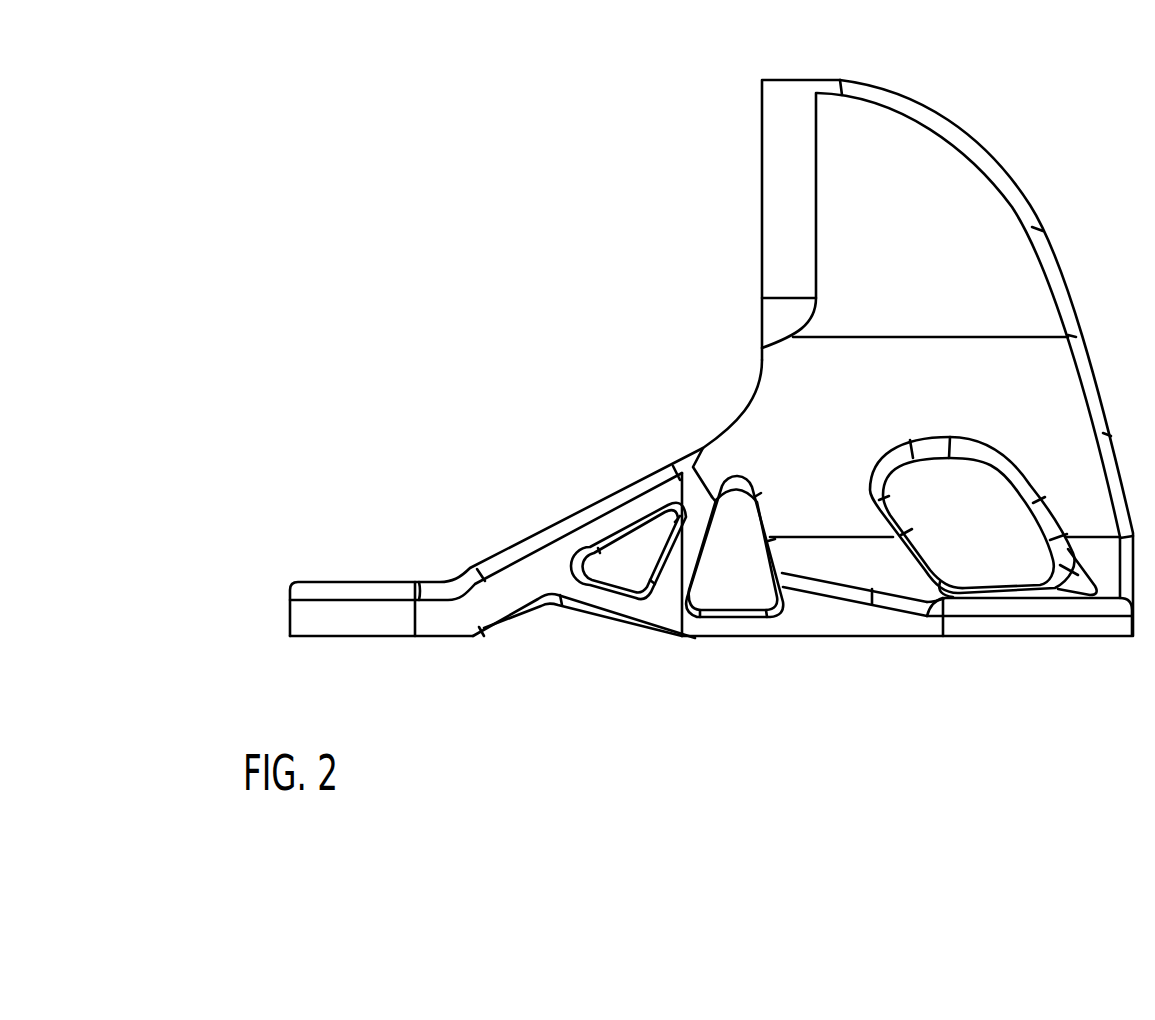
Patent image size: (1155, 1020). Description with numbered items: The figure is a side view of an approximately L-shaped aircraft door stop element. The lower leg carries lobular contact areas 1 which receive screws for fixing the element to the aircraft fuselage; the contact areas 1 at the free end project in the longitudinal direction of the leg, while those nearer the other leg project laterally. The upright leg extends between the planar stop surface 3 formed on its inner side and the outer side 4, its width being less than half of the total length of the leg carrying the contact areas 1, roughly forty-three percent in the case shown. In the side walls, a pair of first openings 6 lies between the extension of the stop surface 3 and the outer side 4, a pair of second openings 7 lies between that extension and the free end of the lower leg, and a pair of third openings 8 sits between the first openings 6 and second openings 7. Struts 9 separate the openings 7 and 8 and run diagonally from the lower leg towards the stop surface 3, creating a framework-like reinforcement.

The contact area 1 is at (350, 620).
The stop surface 3 is at (762, 215).
The outer side 4 is at (1048, 240).
The first opening 6 is at (980, 557).
The second opening 7 is at (615, 570).
The third opening 8 is at (738, 593).
The strut 9 is at (670, 586).